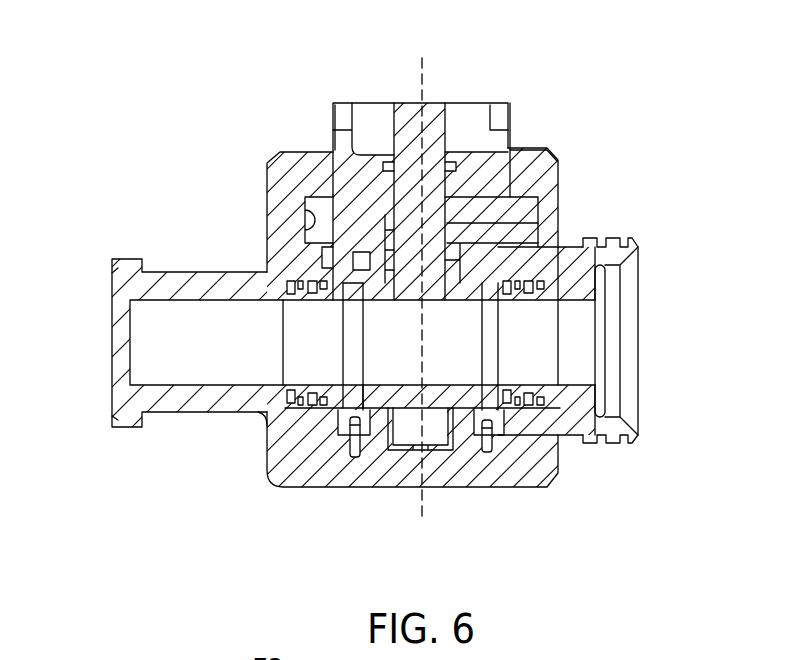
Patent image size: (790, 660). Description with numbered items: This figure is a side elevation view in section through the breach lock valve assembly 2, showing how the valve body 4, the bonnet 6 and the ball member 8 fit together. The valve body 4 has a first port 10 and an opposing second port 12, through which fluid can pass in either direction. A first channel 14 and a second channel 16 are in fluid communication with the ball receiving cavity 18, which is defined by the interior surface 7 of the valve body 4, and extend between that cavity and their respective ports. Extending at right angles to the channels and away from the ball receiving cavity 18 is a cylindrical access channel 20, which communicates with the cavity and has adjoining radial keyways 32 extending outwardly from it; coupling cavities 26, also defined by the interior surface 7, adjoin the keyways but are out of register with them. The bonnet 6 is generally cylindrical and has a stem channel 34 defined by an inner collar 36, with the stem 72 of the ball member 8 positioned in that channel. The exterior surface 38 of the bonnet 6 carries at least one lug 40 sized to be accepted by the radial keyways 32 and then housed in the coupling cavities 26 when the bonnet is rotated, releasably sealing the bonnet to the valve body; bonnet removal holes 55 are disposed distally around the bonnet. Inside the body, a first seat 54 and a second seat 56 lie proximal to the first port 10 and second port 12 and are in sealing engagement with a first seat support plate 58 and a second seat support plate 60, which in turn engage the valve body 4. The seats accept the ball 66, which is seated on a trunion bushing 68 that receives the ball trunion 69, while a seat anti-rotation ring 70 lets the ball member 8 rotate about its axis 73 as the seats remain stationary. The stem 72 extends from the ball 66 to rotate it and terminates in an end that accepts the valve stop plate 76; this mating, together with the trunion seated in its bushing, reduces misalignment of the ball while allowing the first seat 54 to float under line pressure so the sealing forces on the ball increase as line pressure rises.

The valve assembly 2 is at (158, 133).
The valve body 4 is at (267, 170).
The bonnet 6 is at (327, 143).
The interior surface 7 is at (385, 202).
The ball member 8 is at (333, 193).
The first port 10 is at (118, 396).
The second port 12 is at (637, 425).
The first channel 14 is at (140, 351).
The second channel 16 is at (582, 343).
The ball receiving cavity 18 is at (357, 318).
The access channel 20 is at (513, 170).
The coupling cavities 26 is at (530, 213).
The radial keyways 32 is at (528, 148).
The stem channel 34 is at (500, 250).
The inner collar 36 is at (538, 223).
The exterior surface 38 is at (330, 143).
The lug 40 is at (317, 230).
The first seat 54 is at (342, 410).
The bonnet removal holes 55 is at (485, 117).
The second seat 56 is at (498, 404).
The first seat support plate 58 is at (303, 410).
The second seat support plate 60 is at (540, 404).
The ball 66 is at (381, 412).
The trunion bushing 68 is at (452, 440).
The ball trunion 69 is at (433, 450).
The seat anti-rotation ring 70 is at (373, 410).
The stem 72 is at (388, 185).
The axis 73 is at (425, 62).
The valve stop plate 76 is at (383, 110).